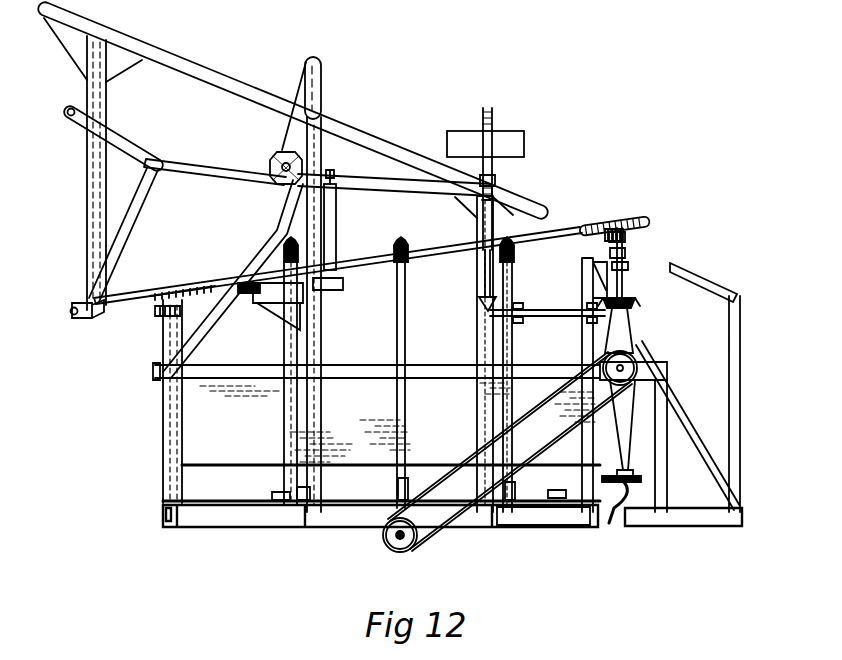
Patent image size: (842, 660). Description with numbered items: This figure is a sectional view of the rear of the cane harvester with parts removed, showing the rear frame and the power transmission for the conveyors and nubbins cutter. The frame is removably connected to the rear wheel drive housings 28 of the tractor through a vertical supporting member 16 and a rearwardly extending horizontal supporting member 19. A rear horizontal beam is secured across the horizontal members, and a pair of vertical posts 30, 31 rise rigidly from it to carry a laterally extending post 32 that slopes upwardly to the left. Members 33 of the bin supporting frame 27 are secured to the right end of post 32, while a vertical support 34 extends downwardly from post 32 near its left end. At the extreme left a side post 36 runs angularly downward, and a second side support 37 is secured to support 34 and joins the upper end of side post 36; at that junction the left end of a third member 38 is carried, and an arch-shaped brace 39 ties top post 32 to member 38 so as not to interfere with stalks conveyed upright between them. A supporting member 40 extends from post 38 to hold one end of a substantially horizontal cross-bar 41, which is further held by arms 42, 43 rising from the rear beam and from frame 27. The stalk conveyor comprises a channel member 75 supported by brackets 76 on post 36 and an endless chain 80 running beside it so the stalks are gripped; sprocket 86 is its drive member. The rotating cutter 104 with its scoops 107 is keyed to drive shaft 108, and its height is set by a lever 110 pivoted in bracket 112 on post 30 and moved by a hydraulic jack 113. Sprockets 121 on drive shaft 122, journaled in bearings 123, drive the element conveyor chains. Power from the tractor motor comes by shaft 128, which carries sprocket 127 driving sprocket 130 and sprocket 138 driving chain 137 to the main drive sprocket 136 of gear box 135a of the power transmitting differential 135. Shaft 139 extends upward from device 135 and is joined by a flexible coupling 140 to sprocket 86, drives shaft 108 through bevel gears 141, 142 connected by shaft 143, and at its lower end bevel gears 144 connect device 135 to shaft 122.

The vertical supporting member 16 is at (310, 513).
The horizontal supporting member 19 is at (492, 513).
The bin supporting frame 27 is at (706, 526).
The rear wheel drive housings 28 is at (352, 522).
The vertical post 30 is at (323, 241).
The vertical post 31 is at (476, 228).
The laterally extending post 32 is at (362, 128).
The members of bin supporting frame 33 is at (700, 454).
The vertical support 34 is at (106, 86).
The side post 36 is at (126, 233).
The second side support 37 is at (125, 143).
The third member 38 is at (222, 170).
The brace 39 is at (323, 80).
The supporting member 40 is at (275, 232).
The cross-bar 41 is at (350, 365).
The arm 42 is at (184, 422).
The arm 43 is at (668, 480).
The channel member 75 is at (372, 266).
The endless chain 80 is at (433, 262).
The brackets 76 is at (95, 316).
The sprocket 86 is at (640, 218).
The rotating cutter 104 is at (505, 160).
The arms or scoops 107 is at (525, 144).
The drive shaft 108 is at (513, 272).
The lever 110 is at (357, 160).
The bracket 112 is at (283, 185).
The hydraulic jack 113 is at (338, 208).
The sprockets 121 is at (310, 492).
The drive shaft 122 is at (548, 500).
The bearings 123 is at (277, 498).
The sprocket 127 is at (393, 553).
The shaft 128 is at (416, 548).
The sprocket 130 is at (282, 257).
The power transmitting differential 135 is at (627, 409).
The gear box 135a is at (652, 366).
The main drive sprocket 136 is at (634, 356).
The chain 137 is at (436, 522).
The sprocket 138 is at (420, 561).
The shaft 139 is at (623, 290).
The flexible coupling 140 is at (627, 249).
The bevel gears 141 is at (637, 308).
The bevel gears 142 is at (490, 310).
The shaft 143 is at (561, 312).
The bevel gears 144 is at (621, 508).